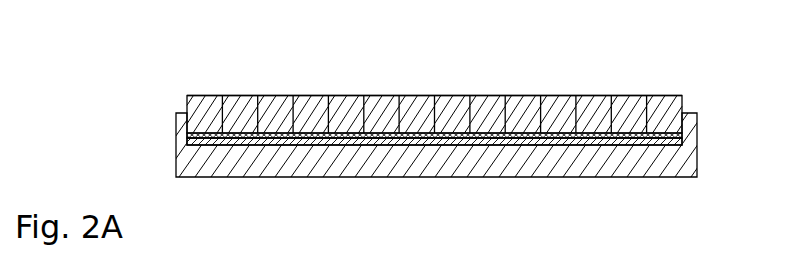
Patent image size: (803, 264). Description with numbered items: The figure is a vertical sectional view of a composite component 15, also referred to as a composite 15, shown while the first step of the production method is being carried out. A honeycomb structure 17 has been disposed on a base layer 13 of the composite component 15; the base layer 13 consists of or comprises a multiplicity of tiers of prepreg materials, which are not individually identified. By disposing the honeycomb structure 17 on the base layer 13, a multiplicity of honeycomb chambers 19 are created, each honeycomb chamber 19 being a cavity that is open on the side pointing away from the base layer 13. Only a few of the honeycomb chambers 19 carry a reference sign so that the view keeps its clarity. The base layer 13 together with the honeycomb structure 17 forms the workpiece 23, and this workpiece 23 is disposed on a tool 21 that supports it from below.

The composite component 15 is at (158, 93).
The base layer 13 is at (187, 135).
The honeycomb structure 17 is at (558, 106).
The honeycomb chambers 19 is at (270, 97).
The tool 21 is at (607, 160).
The workpiece 23 is at (417, 82).